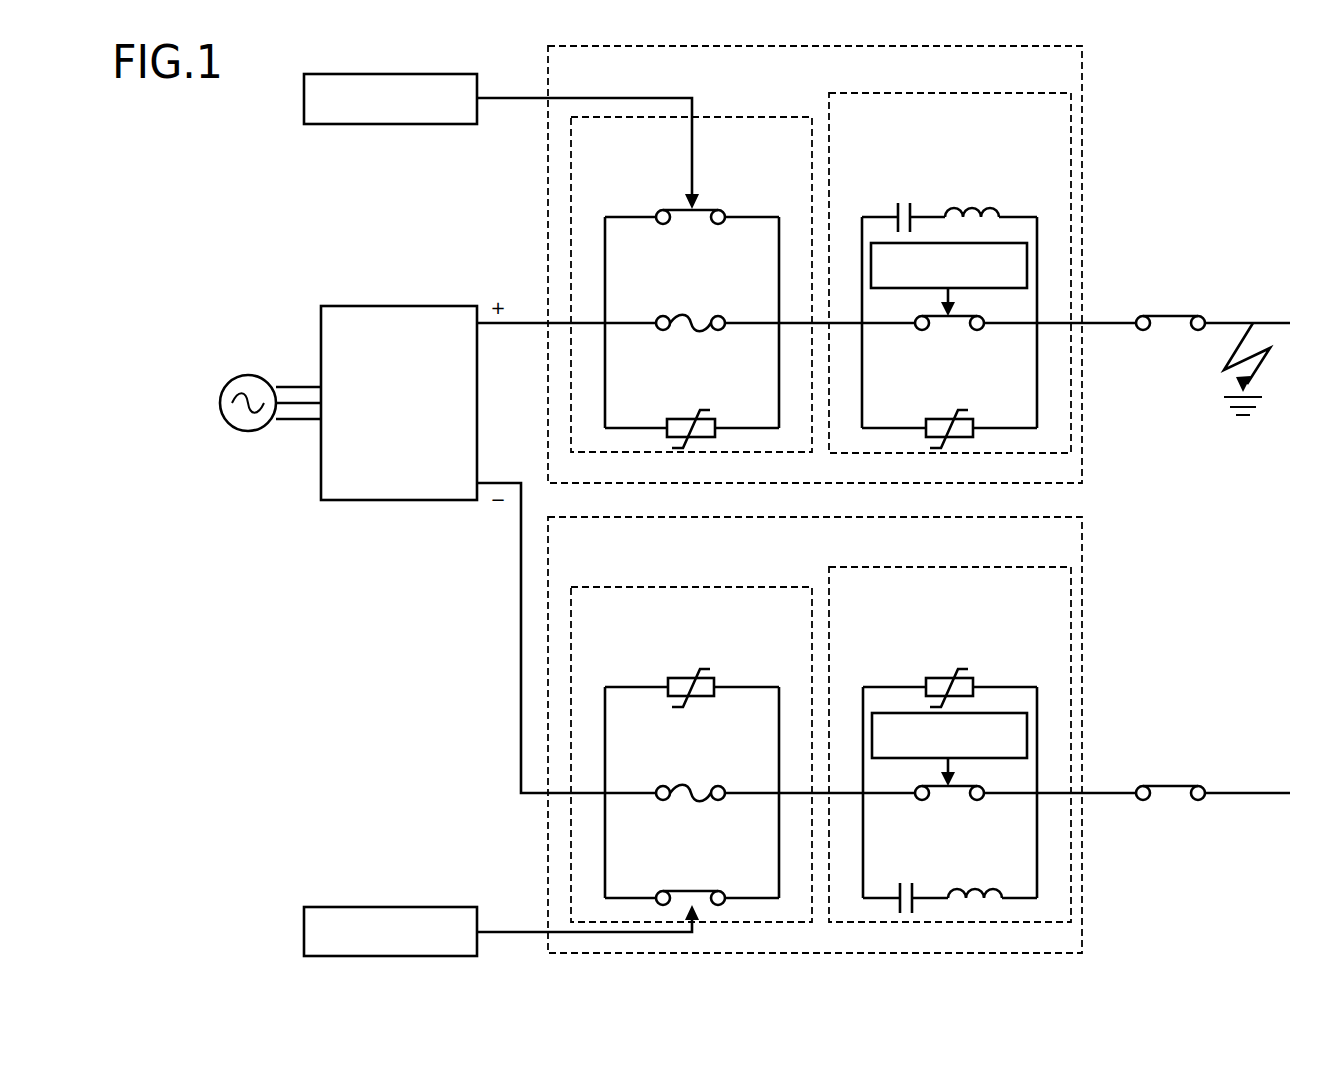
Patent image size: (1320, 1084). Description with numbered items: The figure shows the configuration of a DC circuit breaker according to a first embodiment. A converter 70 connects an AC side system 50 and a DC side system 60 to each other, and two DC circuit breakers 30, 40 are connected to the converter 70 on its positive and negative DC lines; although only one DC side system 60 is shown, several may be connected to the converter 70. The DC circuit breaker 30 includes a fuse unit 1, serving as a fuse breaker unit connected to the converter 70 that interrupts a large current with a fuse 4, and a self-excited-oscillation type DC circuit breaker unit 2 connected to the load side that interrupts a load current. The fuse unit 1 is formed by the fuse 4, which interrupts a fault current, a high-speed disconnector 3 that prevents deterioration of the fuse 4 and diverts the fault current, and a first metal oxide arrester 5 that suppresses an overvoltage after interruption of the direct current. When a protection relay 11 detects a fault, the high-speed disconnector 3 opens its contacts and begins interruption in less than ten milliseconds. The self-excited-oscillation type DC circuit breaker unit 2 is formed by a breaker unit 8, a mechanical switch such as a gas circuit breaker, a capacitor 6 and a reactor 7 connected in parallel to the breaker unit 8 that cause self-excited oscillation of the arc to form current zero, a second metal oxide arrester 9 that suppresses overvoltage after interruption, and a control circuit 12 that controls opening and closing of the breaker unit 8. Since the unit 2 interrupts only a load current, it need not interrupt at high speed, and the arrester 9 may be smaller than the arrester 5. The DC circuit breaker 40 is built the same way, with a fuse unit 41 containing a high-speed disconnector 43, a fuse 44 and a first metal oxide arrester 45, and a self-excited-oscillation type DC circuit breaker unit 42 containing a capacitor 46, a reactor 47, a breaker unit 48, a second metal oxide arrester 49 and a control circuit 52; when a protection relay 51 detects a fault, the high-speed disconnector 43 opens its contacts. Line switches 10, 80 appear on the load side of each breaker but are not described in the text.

The fuse unit 1 is at (740, 116).
The self-excited-oscillation type DC circuit breaker unit 2 is at (995, 93).
The high-speed disconnector 3 is at (680, 206).
The fuse 4 is at (687, 313).
The first metal oxide arrester 5 is at (687, 415).
The capacitor 6 is at (895, 203).
The reactor 7 is at (978, 200).
The breaker unit 8 is at (960, 320).
The second metal oxide arrester 9 is at (938, 415).
The disconnecting switch 10 is at (1170, 314).
The protection relay 11 is at (304, 99).
The control circuit 12 is at (1027, 263).
The DC circuit breaker 30 is at (1083, 57).
The DC circuit breaker 40 is at (1083, 527).
The fuse unit 41 is at (740, 587).
The self-excited-oscillation type DC circuit breaker unit 42 is at (997, 567).
The high-speed disconnector 43 is at (700, 890).
The fuse 44 is at (703, 785).
The first metal oxide arrester 45 is at (668, 680).
The capacitor 46 is at (901, 883).
The reactor 47 is at (988, 886).
The breaker unit 48 is at (958, 800).
The second metal oxide arrester 49 is at (925, 680).
The AC side system 50 is at (288, 386).
The protection relay 51 is at (304, 931).
The control circuit 52 is at (1027, 733).
The DC side system 60 is at (516, 266).
The converter 70 is at (398, 305).
The disconnecting switch 80 is at (1170, 785).